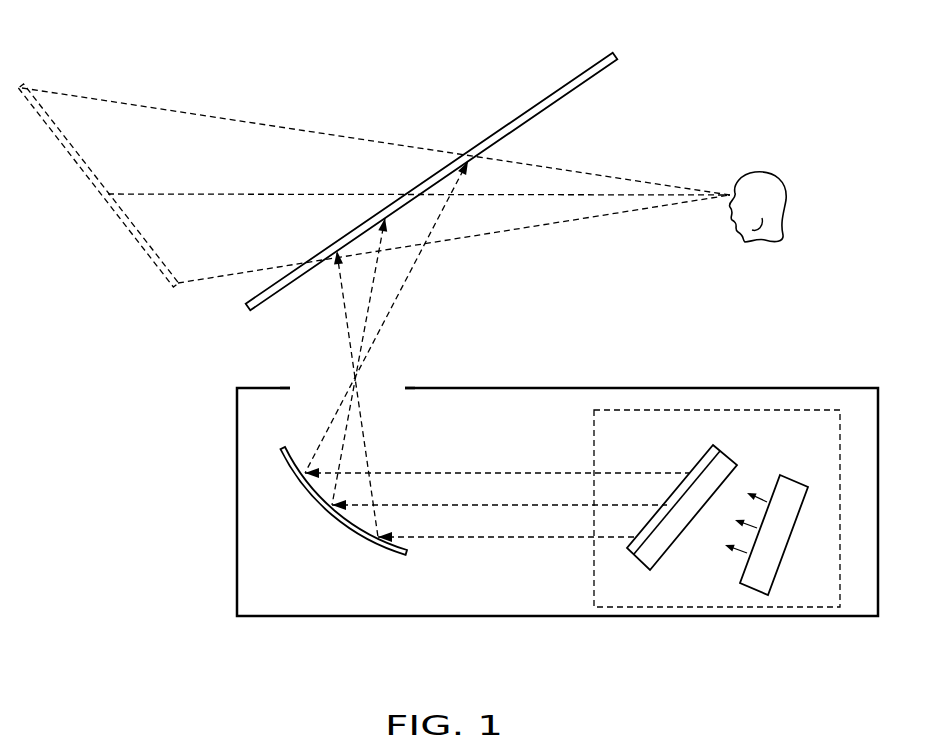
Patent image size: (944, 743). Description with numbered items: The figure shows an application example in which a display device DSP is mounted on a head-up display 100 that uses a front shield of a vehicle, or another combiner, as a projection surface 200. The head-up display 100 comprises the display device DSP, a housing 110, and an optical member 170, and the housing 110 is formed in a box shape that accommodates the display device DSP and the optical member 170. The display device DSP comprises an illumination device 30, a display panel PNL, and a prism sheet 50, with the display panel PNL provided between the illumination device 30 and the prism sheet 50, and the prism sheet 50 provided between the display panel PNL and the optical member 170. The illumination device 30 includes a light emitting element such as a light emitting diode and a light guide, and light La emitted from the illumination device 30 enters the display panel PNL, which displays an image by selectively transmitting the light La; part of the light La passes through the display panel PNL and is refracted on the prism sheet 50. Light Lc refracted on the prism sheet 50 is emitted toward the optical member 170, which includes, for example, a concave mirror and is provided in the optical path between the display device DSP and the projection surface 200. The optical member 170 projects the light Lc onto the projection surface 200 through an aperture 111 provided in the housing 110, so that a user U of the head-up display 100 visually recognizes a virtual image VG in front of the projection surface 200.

The head-up display 100 is at (509, 468).
The housing 110 is at (765, 387).
The aperture 111 is at (315, 388).
The optical member 170 is at (340, 526).
The projection surface 200 is at (555, 92).
The user U is at (766, 153).
The virtual image VG is at (20, 85).
The light Lc is at (540, 471).
The light La is at (758, 500).
The display device DSP is at (813, 607).
The display panel PNL is at (646, 555).
The prism sheet 50 is at (626, 549).
The illumination device 30 is at (751, 594).